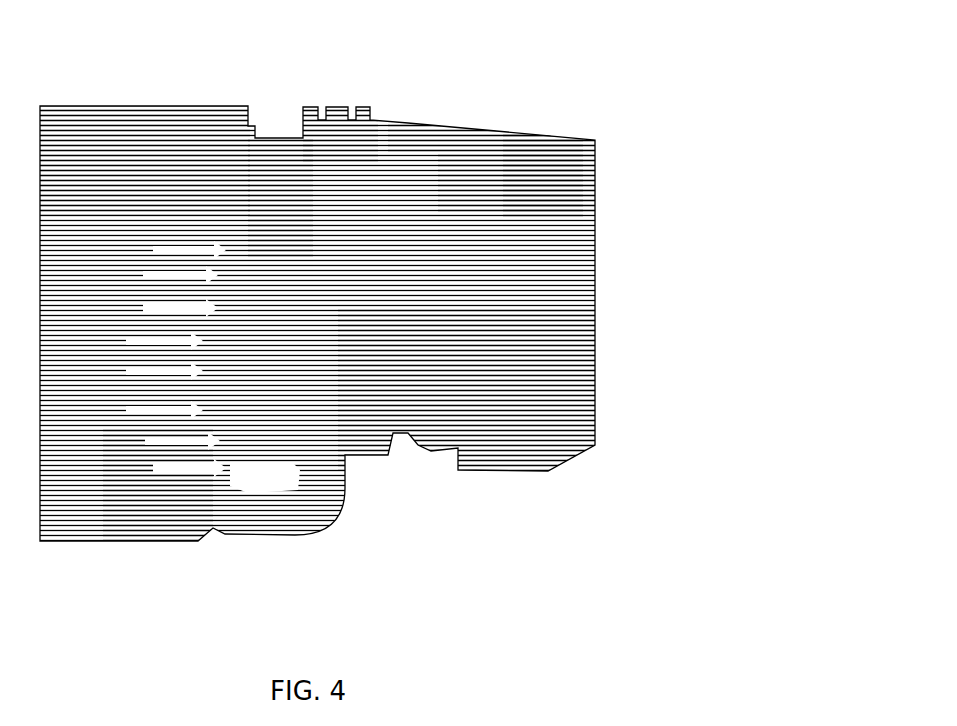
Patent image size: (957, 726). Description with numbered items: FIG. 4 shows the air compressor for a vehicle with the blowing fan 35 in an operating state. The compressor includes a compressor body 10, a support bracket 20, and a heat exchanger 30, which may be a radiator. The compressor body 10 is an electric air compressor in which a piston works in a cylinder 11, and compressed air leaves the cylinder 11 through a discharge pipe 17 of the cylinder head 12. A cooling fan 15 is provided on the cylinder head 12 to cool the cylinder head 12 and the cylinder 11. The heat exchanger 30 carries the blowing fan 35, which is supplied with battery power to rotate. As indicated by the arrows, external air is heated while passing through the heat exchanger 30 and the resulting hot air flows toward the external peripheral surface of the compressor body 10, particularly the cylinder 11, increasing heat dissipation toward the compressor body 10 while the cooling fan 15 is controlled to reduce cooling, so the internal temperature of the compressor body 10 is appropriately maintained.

The compressor body 10 is at (402, 438).
The cylinder 11 is at (404, 113).
The cylinder head 12 is at (327, 125).
The cooling fan 15 is at (525, 132).
The discharge pipe 17 is at (268, 170).
The support bracket 20 is at (440, 140).
The heat exchanger 30 is at (182, 127).
The blowing fan 35 is at (143, 447).